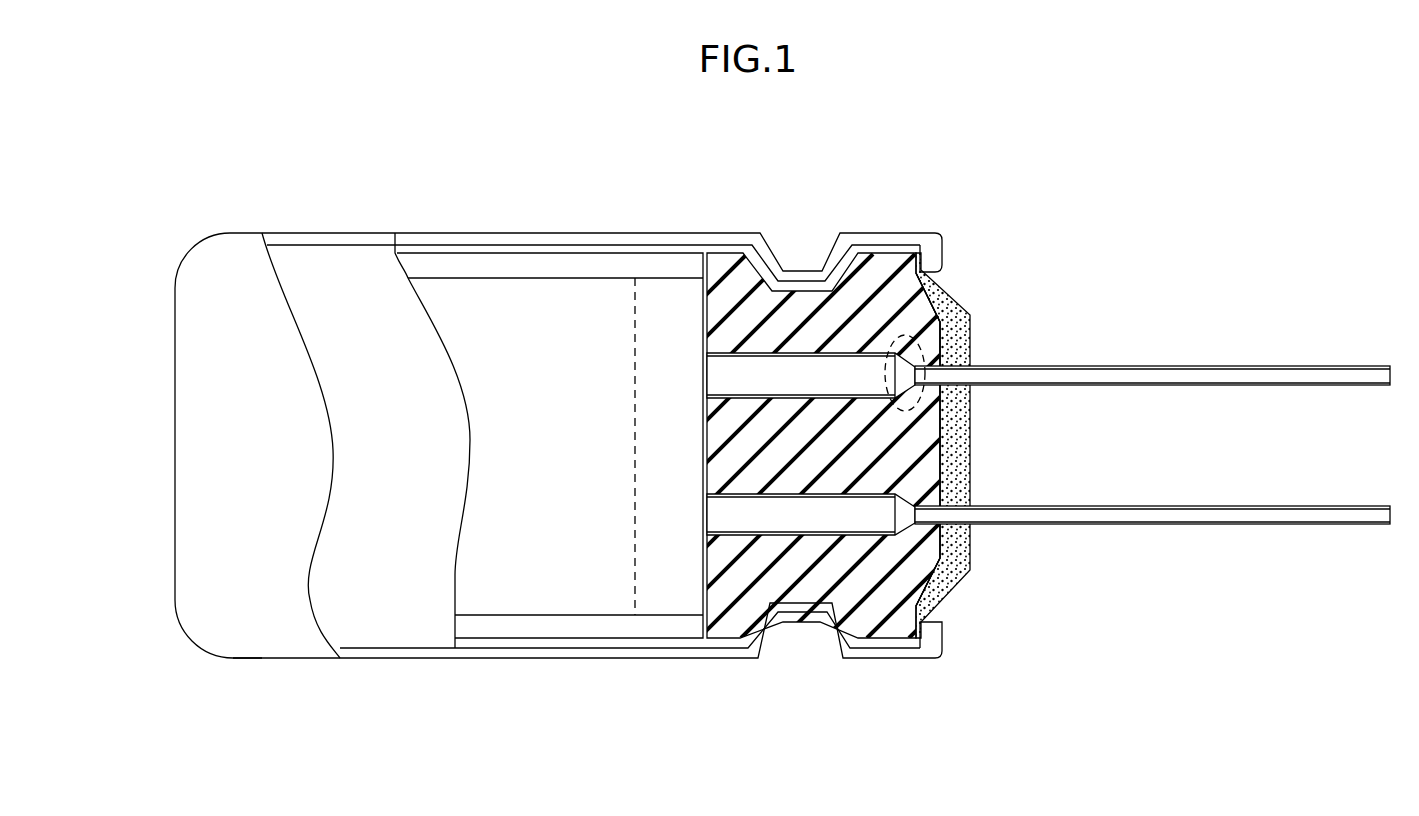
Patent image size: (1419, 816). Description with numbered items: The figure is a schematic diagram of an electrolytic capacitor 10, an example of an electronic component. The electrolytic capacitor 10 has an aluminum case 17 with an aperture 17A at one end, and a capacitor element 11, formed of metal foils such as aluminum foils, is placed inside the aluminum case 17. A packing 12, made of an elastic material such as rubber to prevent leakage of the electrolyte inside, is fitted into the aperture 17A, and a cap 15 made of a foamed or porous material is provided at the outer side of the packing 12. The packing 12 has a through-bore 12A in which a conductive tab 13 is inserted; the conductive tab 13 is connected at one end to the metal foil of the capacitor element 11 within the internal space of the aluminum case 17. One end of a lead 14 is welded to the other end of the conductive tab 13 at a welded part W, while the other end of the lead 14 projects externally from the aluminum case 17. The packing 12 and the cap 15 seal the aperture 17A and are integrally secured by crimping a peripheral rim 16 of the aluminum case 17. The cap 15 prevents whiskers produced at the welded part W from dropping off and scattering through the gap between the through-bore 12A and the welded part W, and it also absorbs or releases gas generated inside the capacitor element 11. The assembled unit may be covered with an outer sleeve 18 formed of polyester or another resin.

The electrolytic capacitor 10 is at (1356, 169).
The capacitor element 11 is at (521, 302).
The packing 12 is at (733, 260).
The through-bore 12A is at (928, 530).
The conductive tab 13 is at (806, 370).
The lead 14 is at (1123, 386).
The cap 15 is at (960, 313).
The peripheral rim 16 is at (958, 642).
The aluminum case 17 is at (342, 277).
The aperture 17A is at (942, 273).
The outer sleeve 18 is at (233, 622).
The welded part W is at (905, 335).